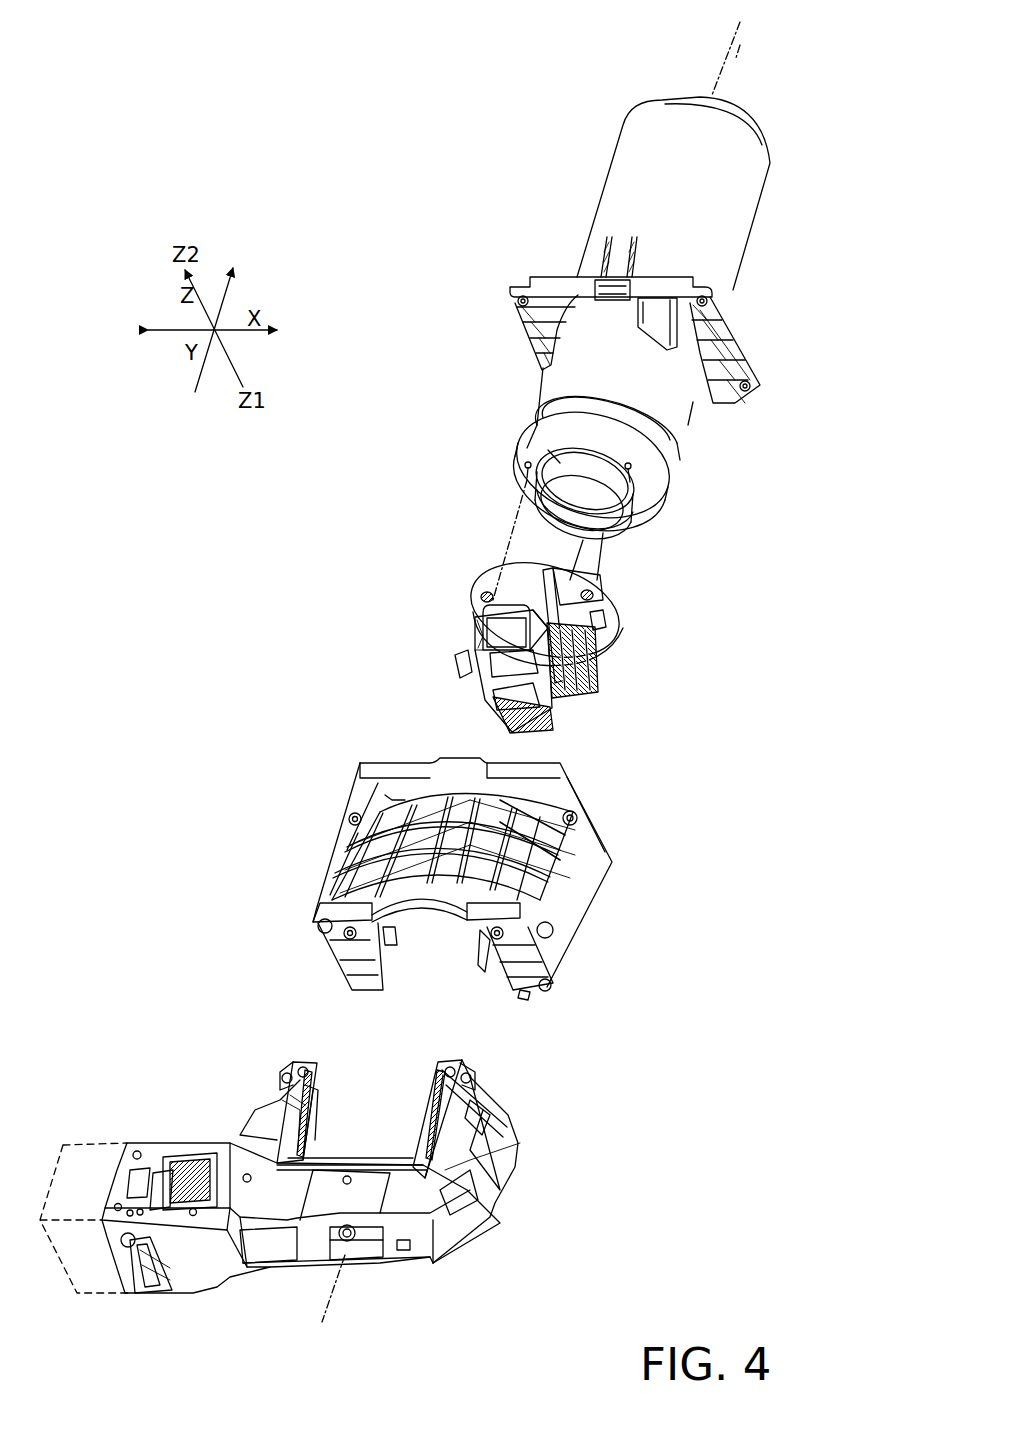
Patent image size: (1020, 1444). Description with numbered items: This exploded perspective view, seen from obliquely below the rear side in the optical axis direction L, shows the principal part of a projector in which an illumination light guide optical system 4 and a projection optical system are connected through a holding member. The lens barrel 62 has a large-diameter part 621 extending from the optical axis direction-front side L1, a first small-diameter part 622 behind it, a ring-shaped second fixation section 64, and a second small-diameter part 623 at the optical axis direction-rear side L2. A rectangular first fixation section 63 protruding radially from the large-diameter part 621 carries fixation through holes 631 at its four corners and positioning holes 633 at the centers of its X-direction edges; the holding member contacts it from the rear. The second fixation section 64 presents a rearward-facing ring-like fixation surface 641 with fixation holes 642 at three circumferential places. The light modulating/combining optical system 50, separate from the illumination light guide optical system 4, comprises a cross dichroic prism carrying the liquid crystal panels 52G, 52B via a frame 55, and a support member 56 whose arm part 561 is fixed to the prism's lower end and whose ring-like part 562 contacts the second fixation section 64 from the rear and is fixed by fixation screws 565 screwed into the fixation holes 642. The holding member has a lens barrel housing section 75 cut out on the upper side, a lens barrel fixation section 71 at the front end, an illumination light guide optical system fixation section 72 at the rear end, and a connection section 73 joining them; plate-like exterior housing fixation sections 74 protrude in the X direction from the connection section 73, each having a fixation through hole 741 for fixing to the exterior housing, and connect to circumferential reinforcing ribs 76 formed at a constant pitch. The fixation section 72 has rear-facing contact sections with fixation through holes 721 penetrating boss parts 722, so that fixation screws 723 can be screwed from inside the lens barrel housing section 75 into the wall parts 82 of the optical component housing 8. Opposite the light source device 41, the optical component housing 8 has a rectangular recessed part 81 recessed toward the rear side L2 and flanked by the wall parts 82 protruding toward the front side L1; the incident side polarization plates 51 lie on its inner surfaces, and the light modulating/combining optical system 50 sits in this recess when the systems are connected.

The illumination light guide optical system 4 is at (146, 1114).
The optical component housing 8 is at (445, 1188).
The light source device 41 is at (95, 1140).
The light modulating/combining optical system 50 is at (418, 638).
The incident side polarization plate 51 is at (323, 1137).
The liquid crystal panel for the B light beam 52B is at (598, 675).
The liquid crystal panel for the G light beam 52G is at (552, 718).
The frame 55 is at (600, 617).
The support member 56 is at (408, 522).
The arm part 561 is at (525, 580).
The ring-like part 562 is at (481, 578).
The fixation screw 565 is at (483, 596).
The lens barrel 62 is at (557, 236).
The large-diameter part 621 is at (617, 163).
The first small-diameter part 622 is at (656, 432).
The second small-diameter part 623 is at (558, 457).
The first fixation section 63 is at (745, 325).
The fixation through hole 631 is at (518, 300).
The positioning hole 633 is at (545, 340).
The second fixation section 64 is at (670, 482).
The fixation surface 641 is at (641, 525).
The fixation hole 642 is at (525, 466).
The lens barrel fixation section 71 is at (377, 803).
The illumination light guide optical system fixation section 72 is at (350, 963).
The fixation through hole 721 is at (385, 935).
The boss part 722 is at (322, 925).
The fixation screw 723 is at (342, 936).
The connection section 73 is at (485, 847).
The exterior housing fixation section 74 is at (335, 855).
The fixation through hole 741 is at (353, 806).
The lens barrel housing section 75 is at (428, 965).
The reinforcing rib 76 is at (402, 795).
The recessed part 81 is at (378, 1110).
The wall part 82 is at (300, 1060).
The optical axis direction L is at (740, 45).
The optical axis direction-front side L1 is at (621, 303).
The optical axis direction-rear side L2 is at (321, 1314).